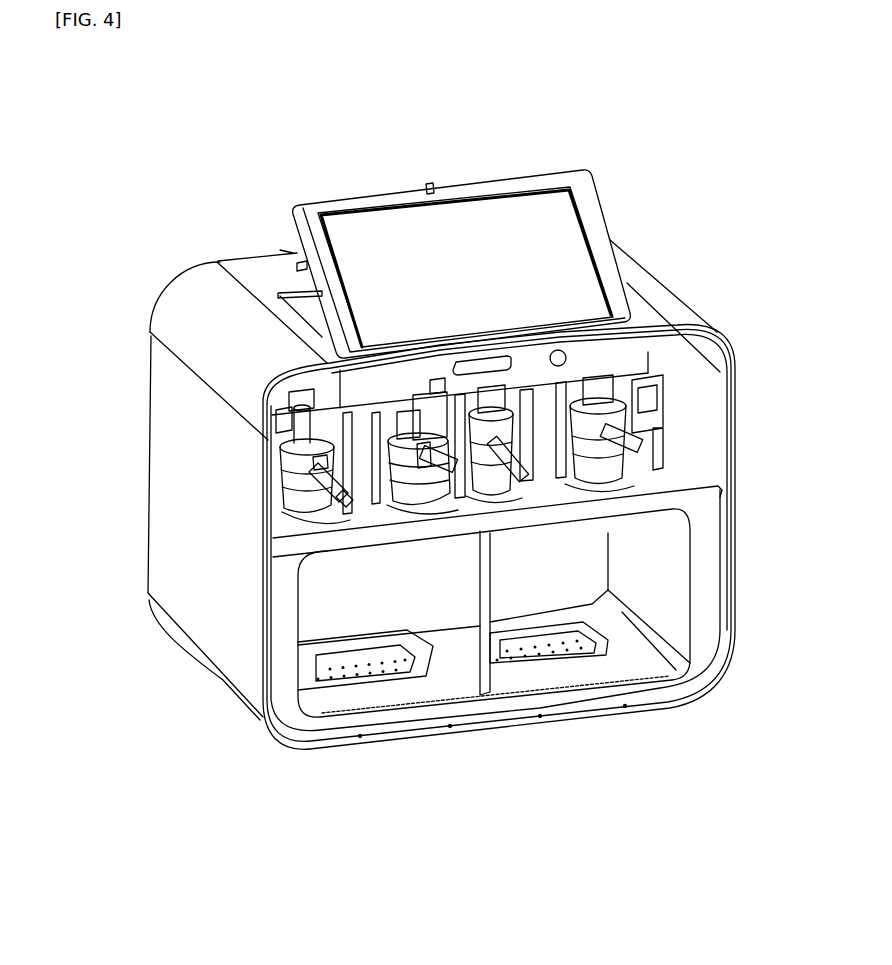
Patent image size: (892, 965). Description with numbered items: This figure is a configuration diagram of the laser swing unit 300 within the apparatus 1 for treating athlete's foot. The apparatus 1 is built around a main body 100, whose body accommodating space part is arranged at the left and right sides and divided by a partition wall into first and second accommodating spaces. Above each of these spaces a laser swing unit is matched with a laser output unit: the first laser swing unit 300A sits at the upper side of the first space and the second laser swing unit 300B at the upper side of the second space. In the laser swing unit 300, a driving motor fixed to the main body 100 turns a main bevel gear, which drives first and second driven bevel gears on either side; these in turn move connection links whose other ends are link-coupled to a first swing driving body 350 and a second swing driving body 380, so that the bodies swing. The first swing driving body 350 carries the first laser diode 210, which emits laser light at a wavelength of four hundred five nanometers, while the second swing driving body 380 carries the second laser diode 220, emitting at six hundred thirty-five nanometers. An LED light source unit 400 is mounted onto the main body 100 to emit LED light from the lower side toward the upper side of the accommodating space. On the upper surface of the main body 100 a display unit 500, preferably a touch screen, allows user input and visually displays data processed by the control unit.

The apparatus for treating athlete's foot 1 is at (593, 126).
The main body 100 is at (737, 393).
The first laser diode 210 is at (440, 385).
The second laser diode 220 is at (268, 410).
The laser swing unit 300 is at (446, 606).
The first laser swing unit 300A is at (290, 522).
The second laser swing unit 300B is at (640, 474).
The first swing driving body 350 is at (463, 550).
The second swing driving body 380 is at (315, 505).
The LED light source unit 400 is at (530, 666).
The display unit 500 is at (513, 227).